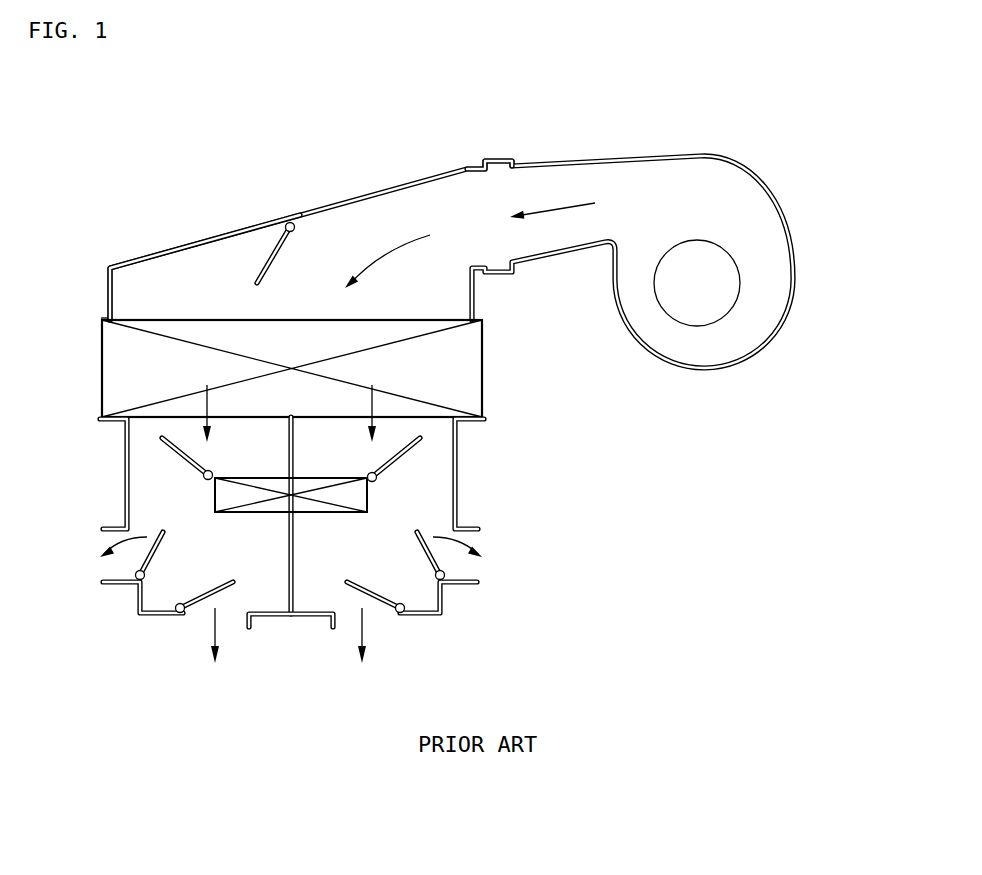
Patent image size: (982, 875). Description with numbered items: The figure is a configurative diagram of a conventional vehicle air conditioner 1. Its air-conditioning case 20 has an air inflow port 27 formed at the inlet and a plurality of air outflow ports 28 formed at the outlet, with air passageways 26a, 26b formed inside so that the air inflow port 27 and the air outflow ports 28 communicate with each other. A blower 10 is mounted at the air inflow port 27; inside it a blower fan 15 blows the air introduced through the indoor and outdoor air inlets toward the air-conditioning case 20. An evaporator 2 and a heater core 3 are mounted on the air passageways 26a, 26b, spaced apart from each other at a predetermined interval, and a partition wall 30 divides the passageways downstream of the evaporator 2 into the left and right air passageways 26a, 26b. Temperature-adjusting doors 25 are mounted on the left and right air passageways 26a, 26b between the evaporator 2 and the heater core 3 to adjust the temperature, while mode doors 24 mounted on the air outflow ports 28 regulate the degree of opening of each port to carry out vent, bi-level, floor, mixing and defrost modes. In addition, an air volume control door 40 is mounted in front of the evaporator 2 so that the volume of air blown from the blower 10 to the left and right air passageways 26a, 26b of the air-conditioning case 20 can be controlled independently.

The air conditioner 1 is at (170, 193).
The evaporator 2 is at (118, 373).
The heater core 3 is at (227, 495).
The blower 10 is at (786, 195).
The blower fan 15 is at (741, 283).
The air-conditioning case 20 is at (108, 292).
The mode doors 24 is at (160, 545).
The temperature-adjusting doors 25 is at (172, 448).
The air passageway 26a is at (228, 447).
The air passageway 26b is at (311, 447).
The air inflow port 27 is at (469, 162).
The air outflow ports 28 is at (372, 612).
The partition wall 30 is at (367, 492).
The air volume control door 40 is at (267, 253).